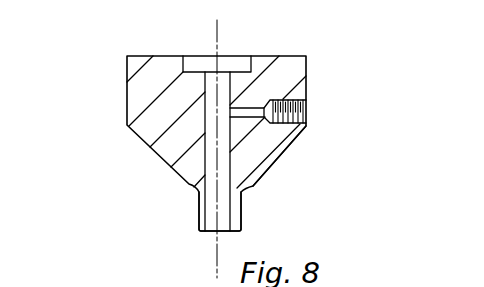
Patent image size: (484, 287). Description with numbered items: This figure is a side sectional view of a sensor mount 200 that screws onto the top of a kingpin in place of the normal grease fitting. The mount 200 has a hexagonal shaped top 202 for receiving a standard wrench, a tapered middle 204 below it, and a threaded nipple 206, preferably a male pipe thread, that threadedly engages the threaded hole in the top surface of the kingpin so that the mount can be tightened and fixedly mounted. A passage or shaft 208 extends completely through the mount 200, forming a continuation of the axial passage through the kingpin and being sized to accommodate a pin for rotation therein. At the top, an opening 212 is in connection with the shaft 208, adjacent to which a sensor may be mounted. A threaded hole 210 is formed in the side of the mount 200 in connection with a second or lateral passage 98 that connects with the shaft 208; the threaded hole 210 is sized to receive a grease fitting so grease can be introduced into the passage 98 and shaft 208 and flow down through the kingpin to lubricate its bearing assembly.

The mount 200 is at (352, 67).
The hexagonal shaped top 202 is at (127, 107).
The tapered middle 204 is at (263, 168).
The threaded nipple 206 is at (200, 212).
The passage or shaft 208 is at (223, 82).
The threaded hole 210 is at (293, 123).
The opening 212 is at (204, 62).
The lateral passage 98 is at (247, 110).